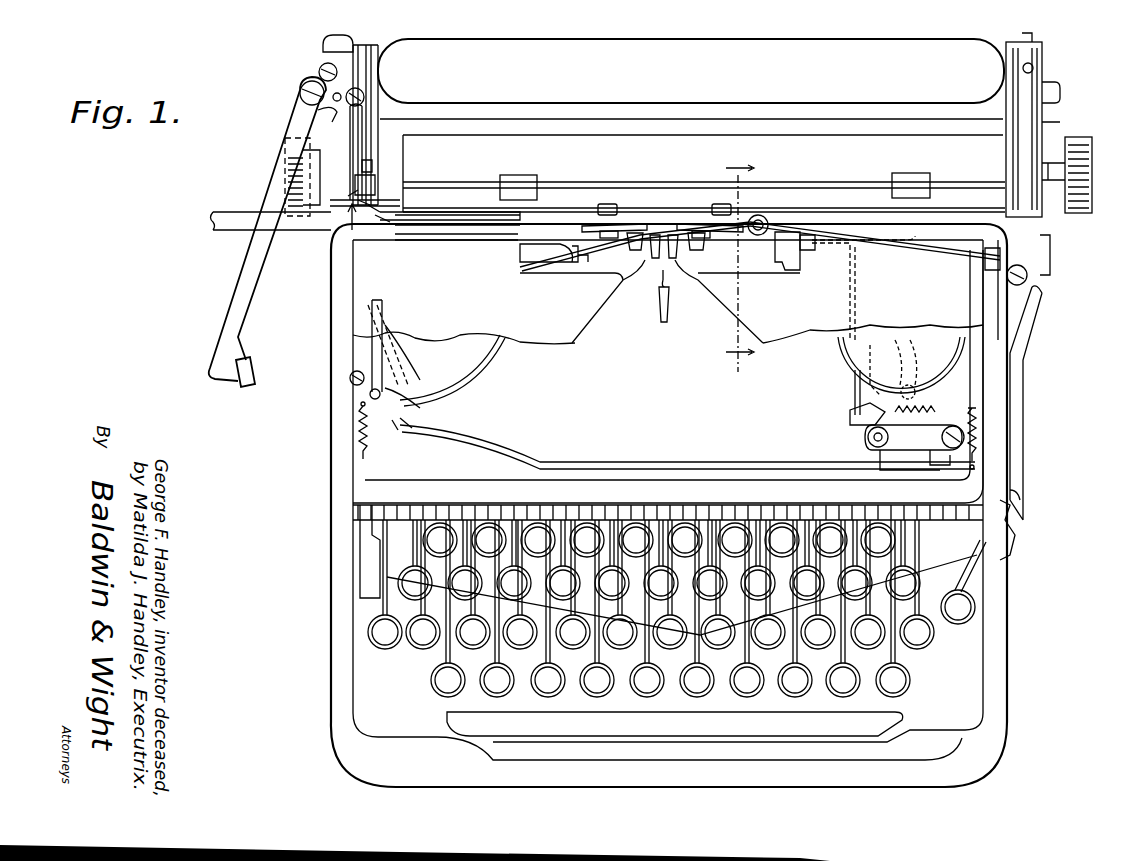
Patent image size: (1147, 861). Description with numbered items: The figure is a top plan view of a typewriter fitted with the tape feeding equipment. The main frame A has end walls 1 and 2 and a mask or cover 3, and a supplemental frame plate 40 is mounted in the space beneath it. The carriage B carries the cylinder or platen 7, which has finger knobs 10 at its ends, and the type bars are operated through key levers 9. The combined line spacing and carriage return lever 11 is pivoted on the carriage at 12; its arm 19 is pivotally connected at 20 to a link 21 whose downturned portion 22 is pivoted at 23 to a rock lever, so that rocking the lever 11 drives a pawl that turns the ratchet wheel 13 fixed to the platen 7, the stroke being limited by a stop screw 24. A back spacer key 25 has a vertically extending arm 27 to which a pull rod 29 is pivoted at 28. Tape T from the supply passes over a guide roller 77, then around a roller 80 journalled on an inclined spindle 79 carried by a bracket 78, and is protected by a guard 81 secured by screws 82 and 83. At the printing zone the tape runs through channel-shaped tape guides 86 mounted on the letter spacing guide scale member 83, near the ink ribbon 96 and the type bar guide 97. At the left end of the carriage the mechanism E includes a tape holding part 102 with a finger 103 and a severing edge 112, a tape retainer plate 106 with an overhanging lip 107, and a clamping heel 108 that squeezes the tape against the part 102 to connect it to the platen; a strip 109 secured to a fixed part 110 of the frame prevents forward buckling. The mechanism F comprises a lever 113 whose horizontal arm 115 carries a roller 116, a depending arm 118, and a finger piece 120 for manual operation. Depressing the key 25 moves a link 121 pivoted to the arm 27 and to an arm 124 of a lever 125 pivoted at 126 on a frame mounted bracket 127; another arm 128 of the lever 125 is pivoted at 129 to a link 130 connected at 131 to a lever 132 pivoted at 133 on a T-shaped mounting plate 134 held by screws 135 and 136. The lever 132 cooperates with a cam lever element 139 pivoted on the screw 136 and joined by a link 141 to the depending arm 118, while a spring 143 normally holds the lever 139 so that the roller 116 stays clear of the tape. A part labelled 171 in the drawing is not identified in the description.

The end wall 1 is at (350, 588).
The end wall 2 is at (1000, 583).
The mask or cover 3 is at (565, 345).
The platen 7 is at (850, 145).
The key levers 9 is at (430, 668).
The finger knobs 10 is at (1088, 180).
The combined line spacing and carriage return lever 11 is at (240, 262).
The pivot 12 is at (300, 90).
The ratchet wheel 13 is at (375, 168).
The arm 19 is at (318, 118).
The pivotal connection 20 is at (364, 99).
The link 21 is at (366, 112).
The downturned portion 22 is at (378, 188).
The pivot 23 is at (350, 205).
The stop screw 24 is at (322, 66).
The back spacer key 25 is at (358, 605).
The vertically extending arm 27 is at (410, 408).
The pivot 28 is at (405, 383).
The pull rod 29 is at (405, 355).
The supplemental frame plate 40 is at (590, 640).
The guide roller 77 is at (1012, 532).
The bracket 78 is at (1052, 248).
The inclined spindle 79 is at (1006, 280).
The roller 80 is at (985, 262).
The guard 81 is at (1024, 362).
The screw 82 is at (1024, 500).
The letter spacing guide scale member 83 is at (645, 222).
The tape guides 86 is at (610, 204).
The ink ribbon 96 is at (648, 262).
The type bar guide 97 is at (676, 265).
The tape holding part 102 is at (383, 228).
The finger 103 is at (430, 218).
The tape retainer plate 106 is at (300, 192).
The lip 107 is at (360, 212).
The clamping heel 108 is at (403, 202).
The strip 109 is at (525, 276).
The fixed part 110 is at (518, 258).
The outer edge 112 is at (372, 222).
The lever 113 is at (795, 222).
The horizontal arm 115 is at (785, 272).
The roller 116 is at (756, 214).
The depending arm 118 is at (850, 250).
The finger piece 120 is at (810, 252).
The link 121 is at (395, 365).
The arm 124 is at (372, 340).
The lever 125 is at (360, 410).
The pivot 126 is at (350, 380).
The frame mounted bracket 127 is at (368, 395).
The arm 128 is at (395, 438).
The pivot 129 is at (412, 440).
The link 130 is at (515, 458).
The connection 131 is at (943, 468).
The lever 132 is at (905, 470).
The pivot 133 is at (901, 366).
The T-shaped mounting plate 134 is at (912, 382).
The screw 135 is at (866, 439).
The screw 136 is at (978, 437).
The cam lever element 139 is at (850, 417).
The link 141 is at (853, 397).
The spring 143 is at (928, 412).
The bar 171 is at (588, 255).